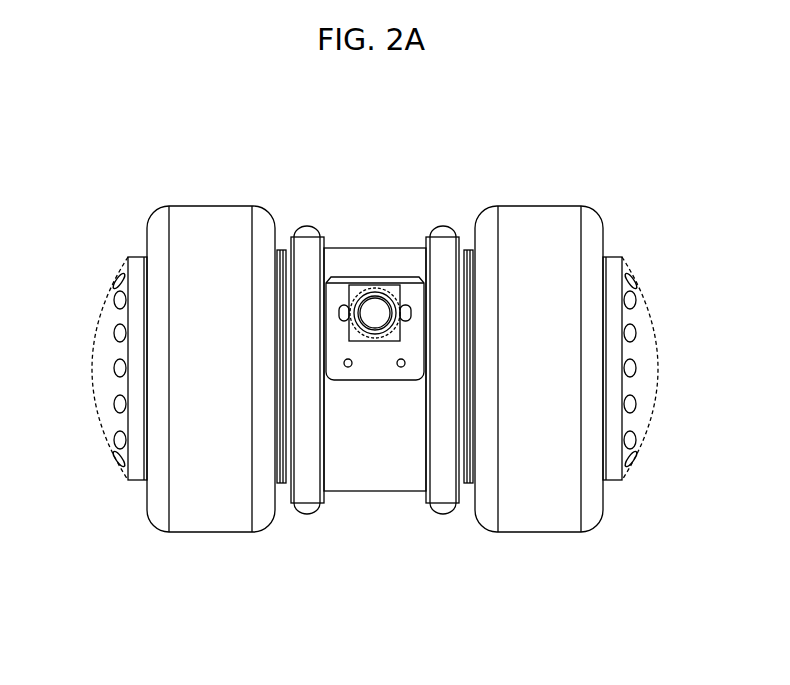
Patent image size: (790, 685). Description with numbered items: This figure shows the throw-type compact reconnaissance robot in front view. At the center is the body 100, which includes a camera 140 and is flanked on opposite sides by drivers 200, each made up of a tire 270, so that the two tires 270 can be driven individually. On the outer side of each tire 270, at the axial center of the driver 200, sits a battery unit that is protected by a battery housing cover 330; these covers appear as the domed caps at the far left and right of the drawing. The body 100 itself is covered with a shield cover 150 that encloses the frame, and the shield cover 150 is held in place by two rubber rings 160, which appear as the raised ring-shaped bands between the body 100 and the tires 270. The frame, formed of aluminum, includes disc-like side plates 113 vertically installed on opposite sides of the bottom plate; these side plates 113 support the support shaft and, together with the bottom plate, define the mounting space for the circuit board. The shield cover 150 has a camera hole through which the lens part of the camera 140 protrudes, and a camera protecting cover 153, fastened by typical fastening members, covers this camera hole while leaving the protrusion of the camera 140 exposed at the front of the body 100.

The body 100 is at (416, 219).
The side plate 113 is at (283, 484).
The camera 140 is at (376, 309).
The shield cover 150 is at (341, 246).
The camera protecting cover 153 is at (375, 366).
The rubber ring 160 is at (301, 227).
The driver 200 is at (236, 193).
The tire 270 is at (195, 206).
The battery housing cover 330 is at (107, 285).